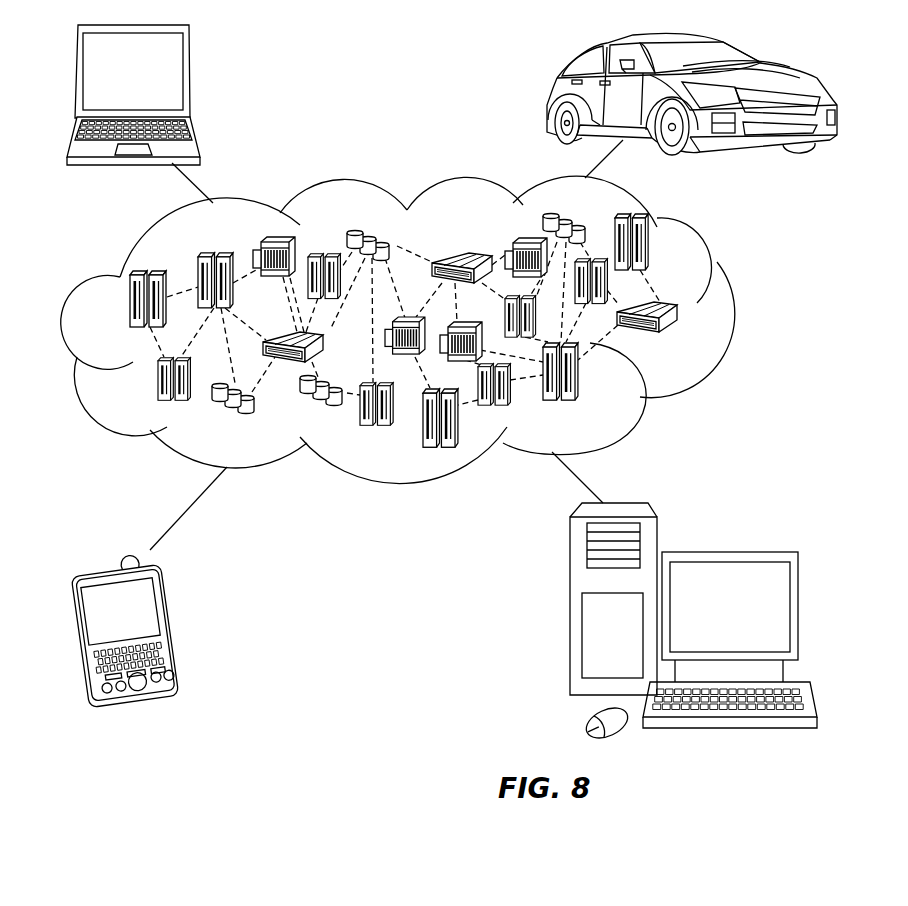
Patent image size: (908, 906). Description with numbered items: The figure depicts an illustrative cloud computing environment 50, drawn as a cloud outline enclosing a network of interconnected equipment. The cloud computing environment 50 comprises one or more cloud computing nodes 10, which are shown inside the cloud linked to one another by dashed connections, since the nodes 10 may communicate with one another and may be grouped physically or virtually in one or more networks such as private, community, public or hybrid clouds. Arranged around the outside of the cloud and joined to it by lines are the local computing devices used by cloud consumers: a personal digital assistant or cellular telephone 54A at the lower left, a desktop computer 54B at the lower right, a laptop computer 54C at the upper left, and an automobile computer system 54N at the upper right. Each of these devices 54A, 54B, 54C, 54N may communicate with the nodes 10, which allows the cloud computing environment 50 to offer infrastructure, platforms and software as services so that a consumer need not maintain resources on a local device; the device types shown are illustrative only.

The cloud computing nodes 10 is at (688, 340).
The cloud computing environment 50 is at (730, 312).
The personal digital assistant (PDA) or cellular telephone 54A is at (177, 627).
The desktop computer 54B is at (727, 552).
The laptop computer 54C is at (190, 79).
The automobile computer system 54N is at (552, 96).